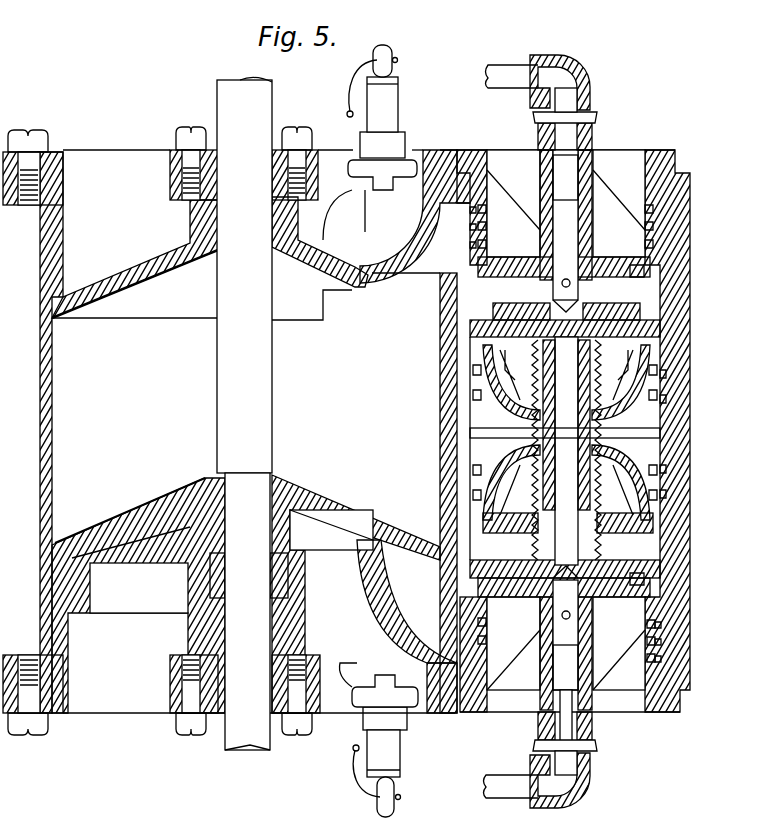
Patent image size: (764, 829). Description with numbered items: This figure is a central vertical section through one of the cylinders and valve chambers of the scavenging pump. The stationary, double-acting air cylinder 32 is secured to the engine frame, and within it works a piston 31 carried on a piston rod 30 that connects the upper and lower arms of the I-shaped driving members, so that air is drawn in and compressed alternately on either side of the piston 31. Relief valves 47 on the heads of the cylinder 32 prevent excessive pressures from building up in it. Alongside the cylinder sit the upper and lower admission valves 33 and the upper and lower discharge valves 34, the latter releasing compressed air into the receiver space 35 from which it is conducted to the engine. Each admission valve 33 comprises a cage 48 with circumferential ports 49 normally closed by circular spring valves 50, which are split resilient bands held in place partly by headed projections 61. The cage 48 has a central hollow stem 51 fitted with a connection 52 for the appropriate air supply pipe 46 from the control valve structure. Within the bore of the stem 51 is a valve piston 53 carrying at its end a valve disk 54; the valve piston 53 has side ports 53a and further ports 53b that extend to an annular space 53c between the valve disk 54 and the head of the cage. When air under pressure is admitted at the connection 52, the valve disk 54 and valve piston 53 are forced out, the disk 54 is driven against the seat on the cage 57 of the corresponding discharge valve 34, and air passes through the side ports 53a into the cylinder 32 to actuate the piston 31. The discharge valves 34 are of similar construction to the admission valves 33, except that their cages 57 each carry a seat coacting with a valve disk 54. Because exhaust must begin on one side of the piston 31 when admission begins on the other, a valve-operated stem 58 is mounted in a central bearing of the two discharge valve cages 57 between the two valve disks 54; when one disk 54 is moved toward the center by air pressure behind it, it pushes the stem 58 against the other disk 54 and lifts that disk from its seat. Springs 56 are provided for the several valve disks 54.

The piston rod 30 is at (243, 377).
The piston 31 is at (170, 497).
The air cylinder 32 is at (32, 382).
The admission valve 33 is at (566, 420).
The discharge valve 34 is at (627, 388).
The receiver space 35 is at (667, 435).
The pipe 46 is at (500, 74).
The relief valve 47 is at (393, 97).
The cage 48 is at (677, 153).
The circumferential port 49 is at (488, 245).
The circular spring valve 50 is at (478, 245).
The central hollow stem 51 is at (593, 175).
The connection 52 is at (568, 108).
The valve piston 53 is at (555, 225).
The side port 53a is at (550, 287).
The port 53b is at (583, 305).
The annular space 53c is at (645, 272).
The valve disk 54 is at (622, 313).
The spring 56 is at (455, 383).
The valve cage 57 is at (657, 340).
The valve-operated stem 58 is at (567, 433).
The headed projection 61 is at (657, 237).